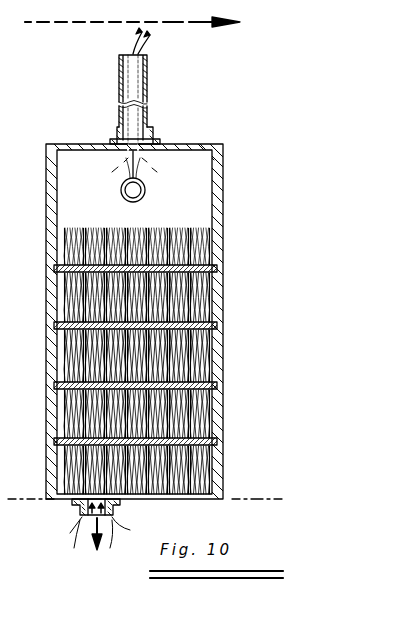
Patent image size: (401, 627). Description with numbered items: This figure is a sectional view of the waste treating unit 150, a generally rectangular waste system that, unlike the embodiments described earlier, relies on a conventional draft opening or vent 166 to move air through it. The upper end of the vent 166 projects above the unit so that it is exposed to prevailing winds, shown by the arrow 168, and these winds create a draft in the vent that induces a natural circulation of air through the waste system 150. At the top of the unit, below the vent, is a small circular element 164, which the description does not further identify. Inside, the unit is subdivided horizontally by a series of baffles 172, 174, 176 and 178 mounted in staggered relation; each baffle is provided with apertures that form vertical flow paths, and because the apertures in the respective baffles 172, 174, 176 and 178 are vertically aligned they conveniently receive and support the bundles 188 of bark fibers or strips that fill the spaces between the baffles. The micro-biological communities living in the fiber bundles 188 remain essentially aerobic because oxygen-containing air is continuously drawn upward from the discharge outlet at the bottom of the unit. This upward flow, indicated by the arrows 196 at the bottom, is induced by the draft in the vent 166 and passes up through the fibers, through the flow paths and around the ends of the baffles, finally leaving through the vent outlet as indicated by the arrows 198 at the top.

The waste treating unit 150 is at (225, 142).
The inlet nozzle opening 164 is at (142, 195).
The vent 166 is at (148, 86).
The prevailing winds arrow 168 is at (190, 24).
The baffle 172 is at (60, 266).
The baffle 174 is at (212, 320).
The baffle 176 is at (61, 378).
The baffle 178 is at (212, 436).
The bundles of bark fibers 188 is at (176, 355).
The air flow arrow 196 is at (116, 537).
The air flow arrow 198 is at (128, 39).